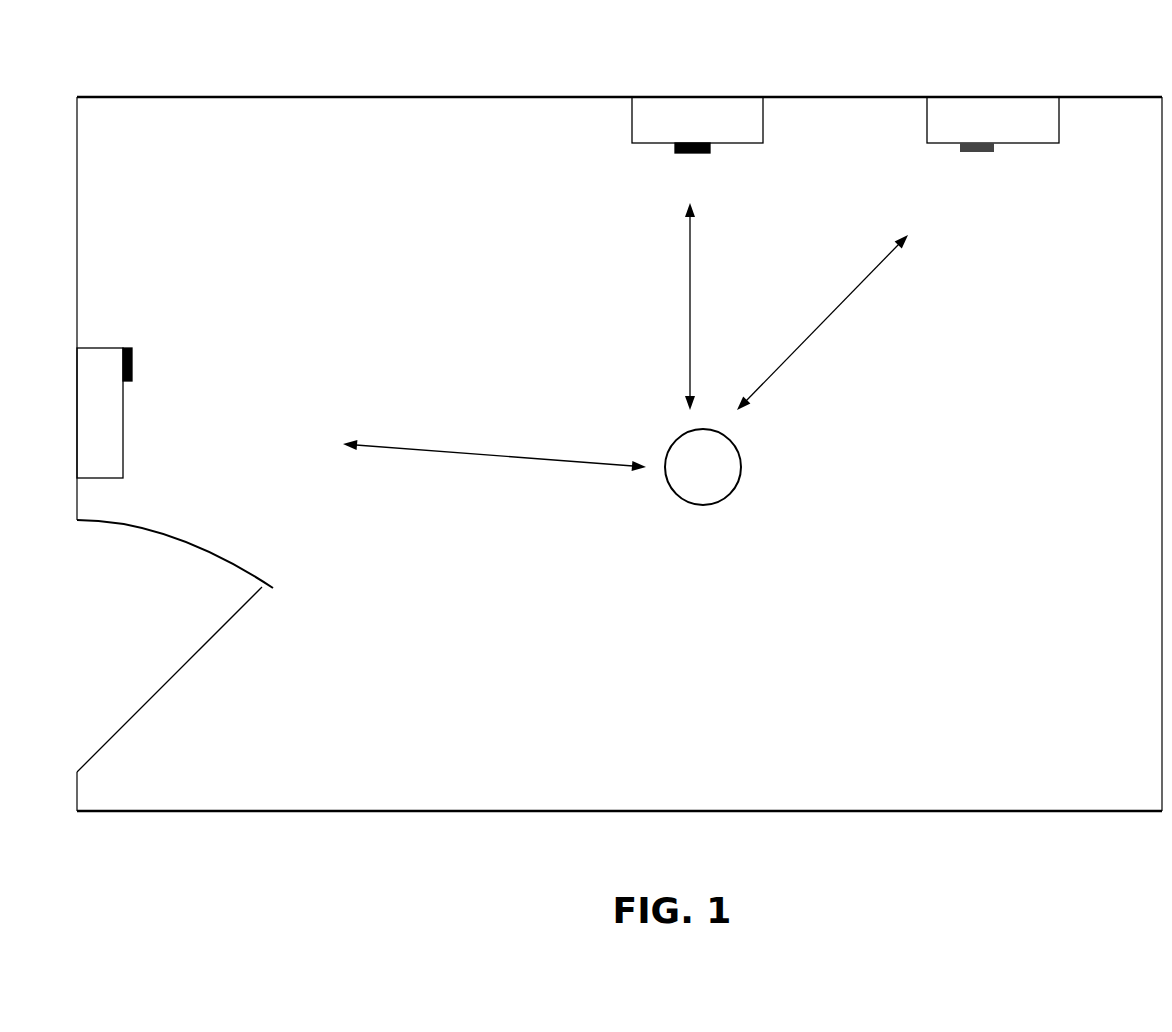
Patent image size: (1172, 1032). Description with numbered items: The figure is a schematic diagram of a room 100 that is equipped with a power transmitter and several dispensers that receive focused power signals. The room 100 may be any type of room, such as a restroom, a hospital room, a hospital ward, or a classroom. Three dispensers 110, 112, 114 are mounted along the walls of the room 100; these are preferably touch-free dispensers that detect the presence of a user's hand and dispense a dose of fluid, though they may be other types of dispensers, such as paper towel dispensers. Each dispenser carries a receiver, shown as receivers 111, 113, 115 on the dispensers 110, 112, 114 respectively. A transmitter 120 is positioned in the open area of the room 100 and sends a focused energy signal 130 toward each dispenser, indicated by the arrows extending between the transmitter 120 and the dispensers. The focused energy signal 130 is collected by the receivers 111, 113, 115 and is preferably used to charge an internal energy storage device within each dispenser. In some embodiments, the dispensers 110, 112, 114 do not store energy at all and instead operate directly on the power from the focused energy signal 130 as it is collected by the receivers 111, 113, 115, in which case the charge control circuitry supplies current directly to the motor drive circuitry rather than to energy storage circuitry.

The room 100 is at (452, 50).
The dispenser 110 is at (760, 145).
The receiver 111 is at (693, 154).
The dispenser 112 is at (1057, 145).
The receiver 113 is at (978, 153).
The dispenser 114 is at (100, 479).
The receiver 115 is at (132, 364).
The transmitter 120 is at (733, 490).
The focused energy signal 130 is at (690, 290).